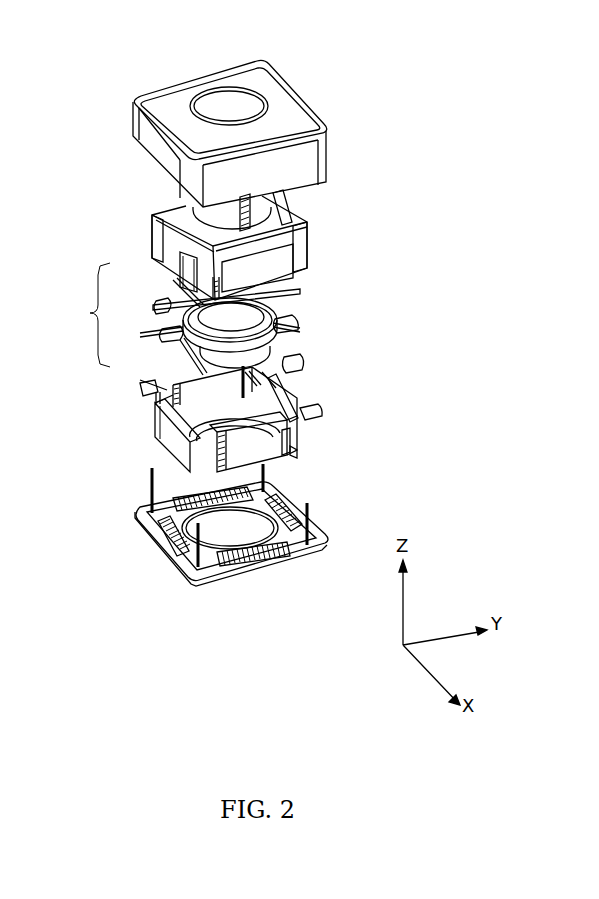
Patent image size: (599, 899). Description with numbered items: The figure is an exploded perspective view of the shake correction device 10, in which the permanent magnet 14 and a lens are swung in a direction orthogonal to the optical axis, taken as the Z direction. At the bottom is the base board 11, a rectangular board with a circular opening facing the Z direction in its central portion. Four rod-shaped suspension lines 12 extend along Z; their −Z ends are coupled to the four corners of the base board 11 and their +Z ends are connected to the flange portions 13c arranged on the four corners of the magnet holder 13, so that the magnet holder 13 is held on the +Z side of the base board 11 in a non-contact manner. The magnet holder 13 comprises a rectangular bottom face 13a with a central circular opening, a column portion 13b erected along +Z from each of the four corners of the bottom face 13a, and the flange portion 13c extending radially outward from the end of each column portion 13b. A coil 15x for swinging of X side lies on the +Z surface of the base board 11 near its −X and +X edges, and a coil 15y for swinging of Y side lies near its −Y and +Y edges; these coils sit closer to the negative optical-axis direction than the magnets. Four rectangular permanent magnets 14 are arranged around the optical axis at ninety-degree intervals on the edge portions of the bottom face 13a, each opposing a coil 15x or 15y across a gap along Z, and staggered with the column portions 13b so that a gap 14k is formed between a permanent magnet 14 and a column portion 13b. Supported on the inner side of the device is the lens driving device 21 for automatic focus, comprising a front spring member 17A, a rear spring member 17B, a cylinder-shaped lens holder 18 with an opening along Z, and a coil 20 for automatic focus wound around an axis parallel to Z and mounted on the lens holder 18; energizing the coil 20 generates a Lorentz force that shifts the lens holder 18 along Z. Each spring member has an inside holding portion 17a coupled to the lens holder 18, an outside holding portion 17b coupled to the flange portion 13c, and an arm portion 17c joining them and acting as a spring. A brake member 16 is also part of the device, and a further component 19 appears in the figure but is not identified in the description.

The shake correction device 10 is at (77, 60).
The base board 11 is at (190, 584).
The suspension line 12 is at (313, 516).
The magnet holder 13 is at (320, 412).
The bottom face 13a is at (292, 386).
The column portion 13b is at (300, 440).
The flange portion 13c is at (143, 381).
The permanent magnet 14 is at (168, 432).
The gap 14k is at (300, 456).
The coil for swinging of X side 15x is at (210, 492).
The coil for swinging of Y side 15y is at (281, 497).
The brake member 16 is at (278, 213).
The front spring member 17A is at (153, 305).
The rear spring member 17B is at (160, 338).
The inside holding portion 17a is at (303, 327).
The outside holding portion 17b is at (303, 342).
The arm portion 17c is at (276, 288).
The lens holder 18 is at (183, 286).
The cover 19 is at (298, 110).
The coil for automatic focus 20 is at (180, 352).
The lens driving device for automatic focus 21 is at (89, 314).